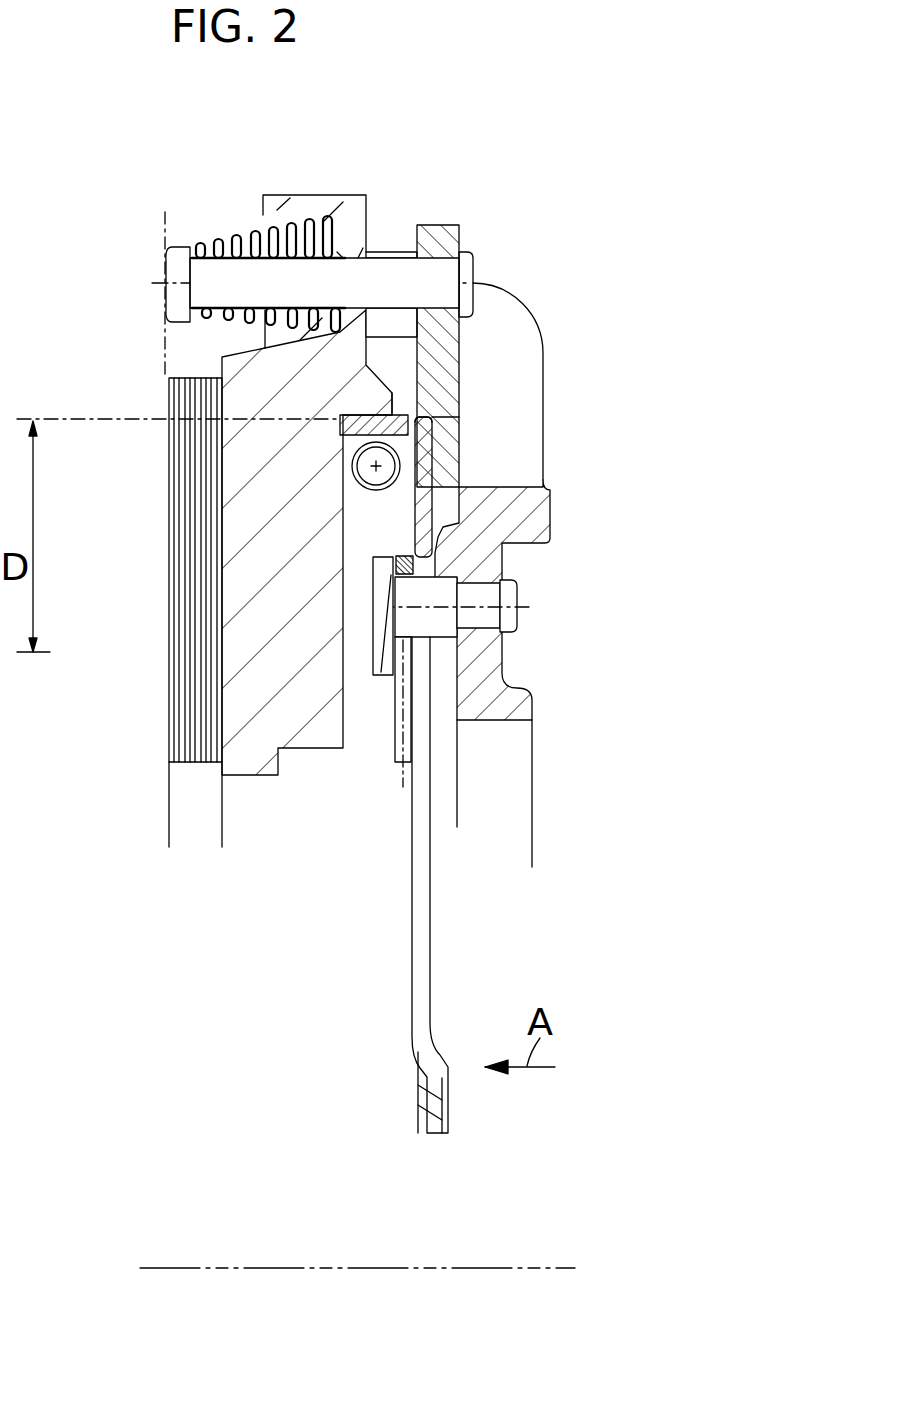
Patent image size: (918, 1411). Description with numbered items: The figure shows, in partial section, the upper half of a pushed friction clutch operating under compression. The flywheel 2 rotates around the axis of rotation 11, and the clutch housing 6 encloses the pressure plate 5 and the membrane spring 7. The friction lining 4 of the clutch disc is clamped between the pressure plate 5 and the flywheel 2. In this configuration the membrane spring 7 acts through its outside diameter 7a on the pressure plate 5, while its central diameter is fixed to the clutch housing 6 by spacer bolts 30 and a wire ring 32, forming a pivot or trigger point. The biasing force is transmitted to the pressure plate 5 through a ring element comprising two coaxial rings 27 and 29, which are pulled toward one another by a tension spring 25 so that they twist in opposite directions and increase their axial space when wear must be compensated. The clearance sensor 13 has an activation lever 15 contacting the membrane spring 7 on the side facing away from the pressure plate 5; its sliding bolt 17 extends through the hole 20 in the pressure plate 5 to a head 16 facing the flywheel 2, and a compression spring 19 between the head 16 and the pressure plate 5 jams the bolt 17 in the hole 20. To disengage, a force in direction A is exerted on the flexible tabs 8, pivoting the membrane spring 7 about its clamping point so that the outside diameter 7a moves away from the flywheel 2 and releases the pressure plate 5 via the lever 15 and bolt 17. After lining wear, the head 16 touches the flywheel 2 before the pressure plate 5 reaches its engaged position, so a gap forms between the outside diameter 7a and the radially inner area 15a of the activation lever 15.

The flywheel 2 is at (163, 216).
The friction lining 4 is at (203, 727).
The pressure plate 5 is at (303, 745).
The clutch housing 6 is at (517, 700).
The membrane spring 7 is at (423, 485).
The outside diameter of the membrane spring 7a is at (430, 419).
The flexible tabs 8 is at (418, 923).
The axis of rotation 11 is at (255, 1270).
The clearance sensor 13 is at (502, 208).
The activation lever 15 is at (441, 232).
The radially inner area of the activation lever 15a is at (430, 424).
The head 16 is at (177, 262).
The sliding bolt 17 is at (383, 268).
The compression spring 19 is at (228, 240).
The hole 20 is at (343, 262).
The tension spring 25 is at (370, 468).
The ring 27 is at (340, 430).
The ring 29 is at (392, 412).
The spacer bolt 30 is at (484, 620).
The wire ring 32 is at (402, 568).